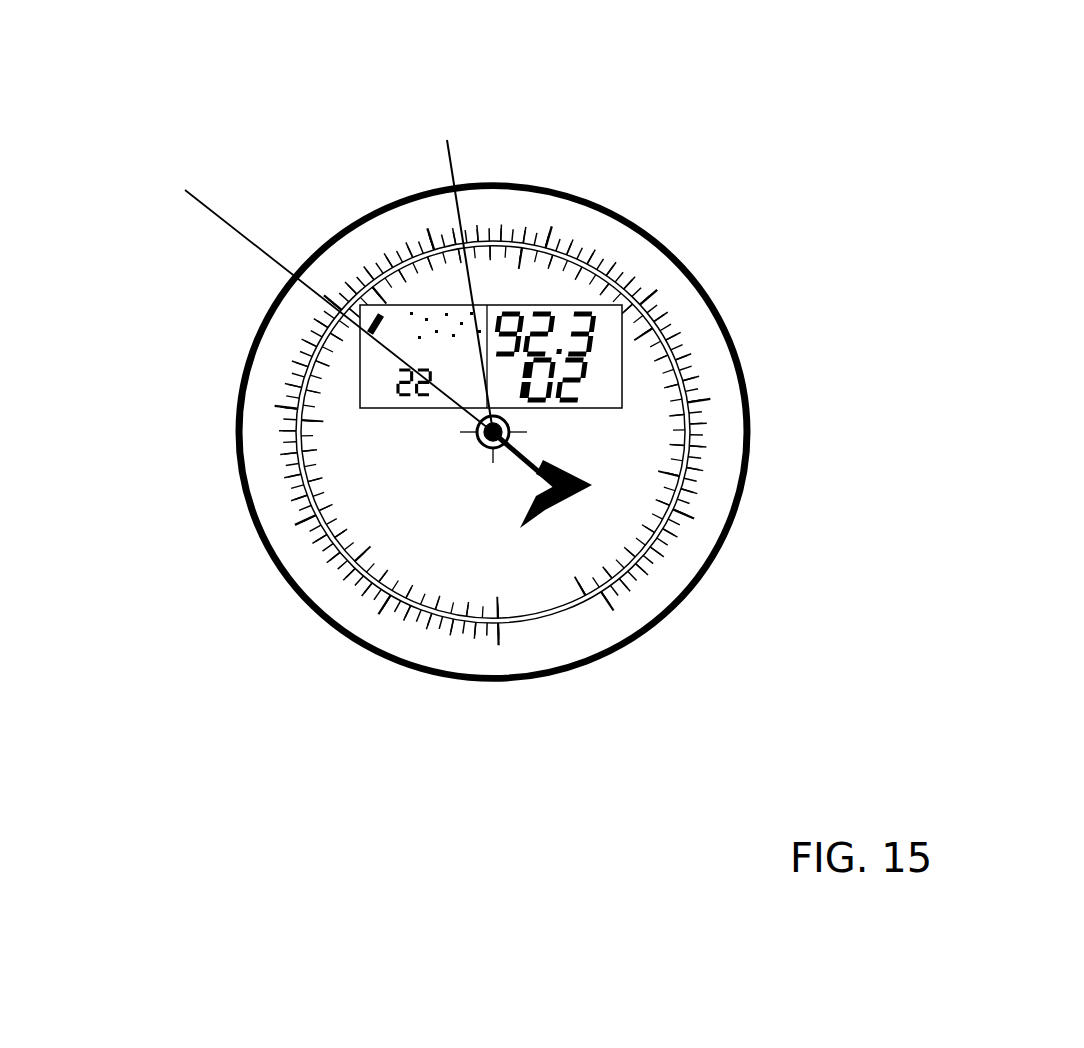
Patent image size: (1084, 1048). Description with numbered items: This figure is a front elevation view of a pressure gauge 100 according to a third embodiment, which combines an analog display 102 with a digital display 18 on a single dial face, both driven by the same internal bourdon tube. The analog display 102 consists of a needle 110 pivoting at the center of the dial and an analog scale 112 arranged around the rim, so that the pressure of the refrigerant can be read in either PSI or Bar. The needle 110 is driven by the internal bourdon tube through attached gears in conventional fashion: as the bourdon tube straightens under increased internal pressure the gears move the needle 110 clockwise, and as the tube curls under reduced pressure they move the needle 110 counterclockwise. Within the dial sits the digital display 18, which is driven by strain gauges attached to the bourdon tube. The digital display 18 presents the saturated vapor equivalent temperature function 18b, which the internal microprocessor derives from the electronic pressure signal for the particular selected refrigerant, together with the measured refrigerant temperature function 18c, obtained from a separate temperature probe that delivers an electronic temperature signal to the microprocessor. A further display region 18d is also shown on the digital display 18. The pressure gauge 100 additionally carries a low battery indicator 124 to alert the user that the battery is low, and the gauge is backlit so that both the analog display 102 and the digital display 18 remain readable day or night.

The pressure gauge 100 is at (755, 205).
The analog display 102 is at (627, 630).
The analog scale 112 is at (417, 628).
The needle 110 is at (485, 289).
The low battery indicator 124 is at (298, 290).
The digital display 18 is at (451, 456).
The saturated vapor equivalent temperature function 18b is at (622, 408).
The measured refrigerant temperature function 18c is at (622, 332).
The refrigerant type readout 18d is at (378, 398).